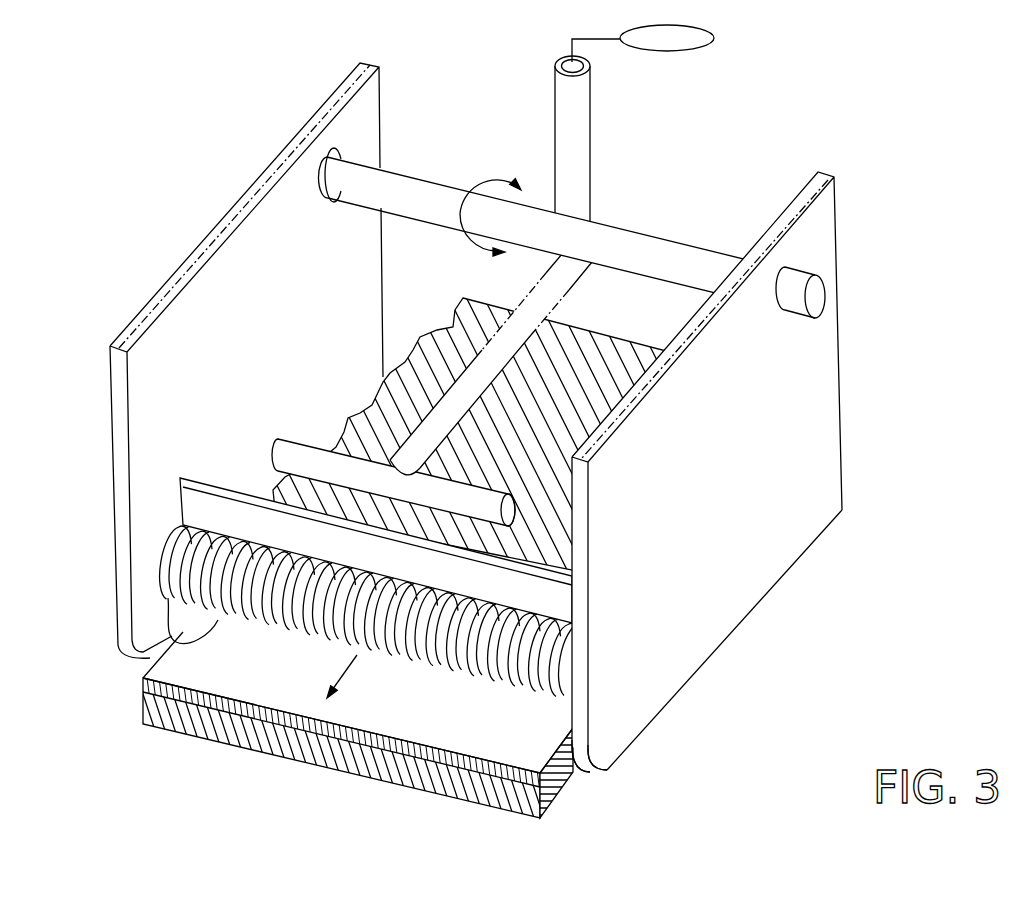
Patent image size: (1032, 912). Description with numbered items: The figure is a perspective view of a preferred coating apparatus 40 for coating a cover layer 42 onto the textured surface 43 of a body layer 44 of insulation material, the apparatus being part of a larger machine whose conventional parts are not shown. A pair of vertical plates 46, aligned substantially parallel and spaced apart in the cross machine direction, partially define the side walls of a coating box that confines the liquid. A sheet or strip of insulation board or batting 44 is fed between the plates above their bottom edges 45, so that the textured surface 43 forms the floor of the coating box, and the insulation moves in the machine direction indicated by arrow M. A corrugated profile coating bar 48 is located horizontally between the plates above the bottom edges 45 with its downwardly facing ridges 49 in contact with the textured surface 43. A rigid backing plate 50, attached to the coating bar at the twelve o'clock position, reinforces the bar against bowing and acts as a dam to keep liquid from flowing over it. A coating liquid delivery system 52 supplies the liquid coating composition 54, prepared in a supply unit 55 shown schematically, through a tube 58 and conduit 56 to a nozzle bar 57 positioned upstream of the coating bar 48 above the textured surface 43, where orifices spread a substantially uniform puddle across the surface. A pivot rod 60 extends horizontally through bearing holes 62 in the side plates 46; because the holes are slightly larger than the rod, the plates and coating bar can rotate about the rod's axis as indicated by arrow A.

The apparatus 40 is at (493, 426).
The cover layer 42 is at (487, 724).
The textured surface 43 is at (455, 304).
The body layer 44 is at (320, 758).
The bottom edges 45 is at (728, 668).
The vertical plates 46 is at (122, 333).
The coating bar 48 is at (580, 727).
The ridges 49 is at (173, 637).
The backing plate 50 is at (192, 510).
The coating liquid delivery system 52 is at (602, 104).
The liquid coating composition 54 is at (553, 42).
The supply unit 55 is at (667, 38).
The conduit 56 is at (577, 318).
The nozzle bar 57 is at (300, 450).
The tube 58 is at (553, 140).
The pivot rod 60 is at (642, 230).
The bearing holes 62 is at (332, 150).